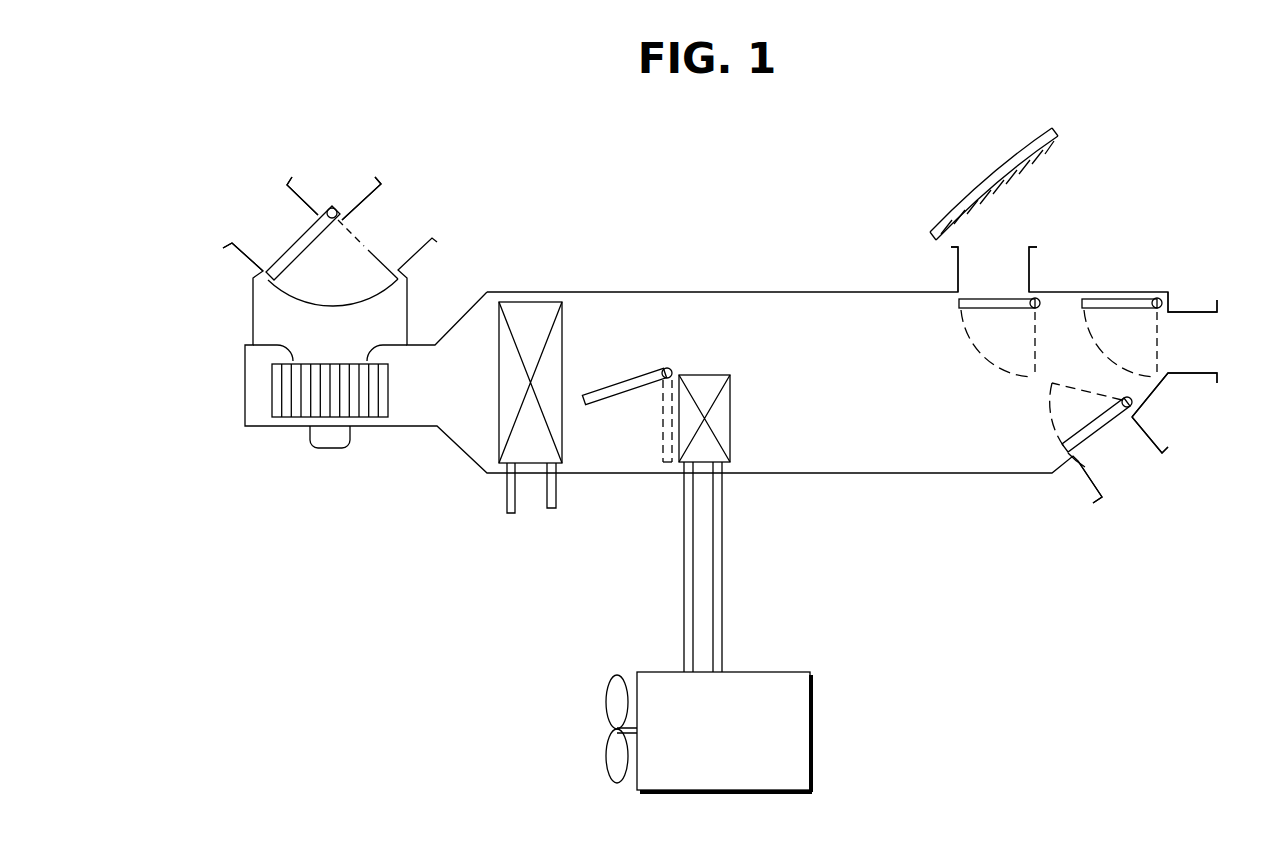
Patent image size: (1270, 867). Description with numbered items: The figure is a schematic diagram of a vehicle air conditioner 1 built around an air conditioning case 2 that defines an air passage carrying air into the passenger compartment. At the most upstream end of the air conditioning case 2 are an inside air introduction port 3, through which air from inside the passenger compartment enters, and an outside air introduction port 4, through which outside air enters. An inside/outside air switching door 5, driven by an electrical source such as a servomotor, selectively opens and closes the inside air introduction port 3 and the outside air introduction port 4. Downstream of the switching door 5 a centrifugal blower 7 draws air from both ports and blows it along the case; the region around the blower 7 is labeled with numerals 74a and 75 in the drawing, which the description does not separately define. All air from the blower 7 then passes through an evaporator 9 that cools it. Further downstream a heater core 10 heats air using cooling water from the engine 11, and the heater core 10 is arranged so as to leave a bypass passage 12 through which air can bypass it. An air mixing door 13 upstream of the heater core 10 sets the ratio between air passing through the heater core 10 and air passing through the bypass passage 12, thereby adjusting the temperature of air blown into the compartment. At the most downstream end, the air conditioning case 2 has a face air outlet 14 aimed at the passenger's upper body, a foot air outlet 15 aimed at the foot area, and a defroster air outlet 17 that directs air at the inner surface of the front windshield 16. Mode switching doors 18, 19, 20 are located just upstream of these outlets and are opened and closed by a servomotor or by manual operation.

The air conditioner 1 is at (674, 197).
The air conditioning case 2 is at (608, 291).
The inside air introduction port 3 is at (287, 215).
The outside air introduction port 4 is at (395, 220).
The inside/outside air switching door 5 is at (290, 253).
The centrifugal blower 7 is at (334, 433).
The evaporator 9 is at (528, 312).
The heater core 10 is at (731, 430).
The engine 11 is at (811, 752).
The bypass passage 12 is at (753, 312).
The air mixing door 13 is at (606, 404).
The face air outlet 14 is at (1195, 345).
The foot air outlet 15 is at (1125, 465).
The front windshield 16 is at (972, 190).
The defroster air outlet 17 is at (990, 260).
The mode switching door 18 is at (1117, 298).
The mode switching door 19 is at (1083, 467).
The mode switching door 20 is at (1000, 298).
The blower outlet passage 74a is at (407, 375).
The blower inlet passage 75 is at (380, 321).